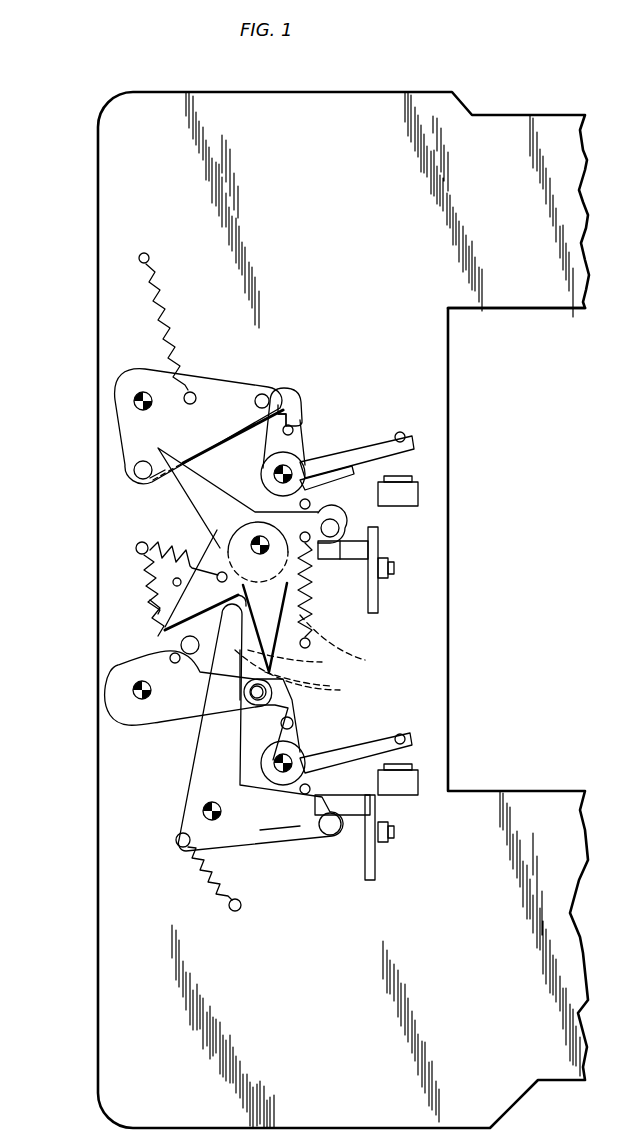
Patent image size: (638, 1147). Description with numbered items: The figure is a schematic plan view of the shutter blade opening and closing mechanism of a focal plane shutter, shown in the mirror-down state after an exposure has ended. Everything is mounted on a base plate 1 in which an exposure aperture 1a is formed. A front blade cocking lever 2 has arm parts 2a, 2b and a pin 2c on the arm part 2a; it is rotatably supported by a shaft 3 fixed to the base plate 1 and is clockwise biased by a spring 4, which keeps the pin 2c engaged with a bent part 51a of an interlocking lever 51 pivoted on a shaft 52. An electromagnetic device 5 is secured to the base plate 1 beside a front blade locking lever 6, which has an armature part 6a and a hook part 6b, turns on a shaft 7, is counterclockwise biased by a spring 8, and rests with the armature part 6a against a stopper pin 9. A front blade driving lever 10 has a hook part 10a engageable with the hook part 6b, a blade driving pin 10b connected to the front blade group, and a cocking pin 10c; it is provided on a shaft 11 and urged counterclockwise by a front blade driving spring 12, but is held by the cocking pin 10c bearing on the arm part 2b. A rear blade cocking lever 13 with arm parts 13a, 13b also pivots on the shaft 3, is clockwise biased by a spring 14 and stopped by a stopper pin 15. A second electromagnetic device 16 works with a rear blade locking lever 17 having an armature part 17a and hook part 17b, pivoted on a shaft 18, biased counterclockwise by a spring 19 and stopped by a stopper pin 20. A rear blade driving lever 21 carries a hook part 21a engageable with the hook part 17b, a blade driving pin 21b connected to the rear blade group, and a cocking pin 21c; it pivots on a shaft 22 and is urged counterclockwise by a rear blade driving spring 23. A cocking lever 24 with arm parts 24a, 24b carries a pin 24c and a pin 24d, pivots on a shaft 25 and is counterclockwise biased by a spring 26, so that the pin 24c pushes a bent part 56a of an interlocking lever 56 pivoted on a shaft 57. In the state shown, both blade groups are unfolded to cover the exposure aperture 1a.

The base plate 1 is at (108, 150).
The exposure aperture 1a is at (516, 310).
The front blade cocking lever 2 is at (150, 480).
The arm part 2a is at (316, 516).
The arm part 2b is at (145, 483).
The pin 2c is at (352, 538).
The shaft 3 is at (260, 530).
The spring 4 is at (313, 605).
The electromagnetic device 5 is at (420, 494).
The front blade locking lever 6 is at (300, 446).
The armature part 6a is at (375, 440).
The hook part 6b is at (288, 387).
The shaft 7 is at (276, 472).
The spring 8 is at (320, 470).
The stopper pin 9 is at (400, 430).
The front blade driving lever 10 is at (128, 425).
The hook part 10a is at (299, 410).
The blade driving pin 10b is at (262, 393).
The cocking pin 10c is at (135, 470).
The shaft 11 is at (135, 400).
The front blade driving spring 12 is at (168, 304).
The rear blade cocking lever 13 is at (238, 541).
The arm part 13a is at (292, 632).
The arm part 13b is at (160, 623).
The spring 14 is at (135, 548).
The stopper pin 15 is at (145, 580).
The electromagnetic device 16 is at (418, 782).
The rear blade locking lever 17 is at (298, 736).
The armature part 17a is at (372, 737).
The hook part 17b is at (272, 694).
The shaft 18 is at (292, 766).
The spring 19 is at (281, 724).
The stopper pin 20 is at (402, 736).
The rear blade driving lever 21 is at (120, 690).
The hook part 21a is at (320, 662).
The blade driving pin 21b is at (252, 700).
The cocking pin 21c is at (182, 650).
The shaft 22 is at (135, 696).
The rear blade driving spring 23 is at (160, 600).
The cocking lever 24 is at (240, 838).
The arm part 24a is at (282, 845).
The arm part 24b is at (205, 762).
The pin 24c is at (332, 842).
The pin 24d is at (326, 686).
The shaft 25 is at (205, 812).
The spring 26 is at (200, 880).
The interlocking lever 51 is at (380, 547).
The bent part 51a is at (340, 560).
The shaft 52 is at (394, 568).
The interlocking lever 56 is at (378, 838).
The bent part 56a is at (372, 808).
The shaft 57 is at (392, 845).